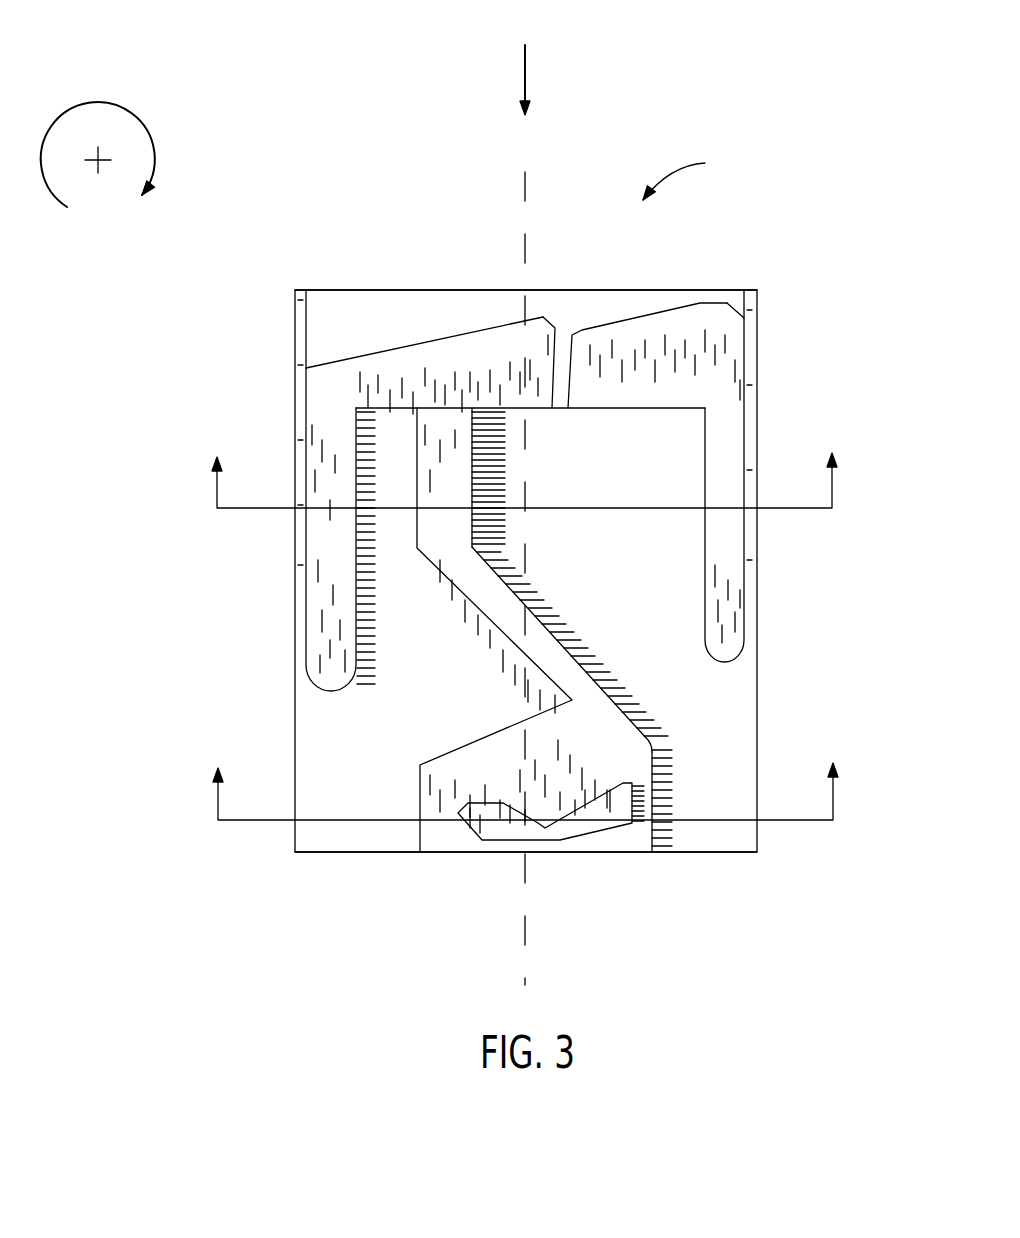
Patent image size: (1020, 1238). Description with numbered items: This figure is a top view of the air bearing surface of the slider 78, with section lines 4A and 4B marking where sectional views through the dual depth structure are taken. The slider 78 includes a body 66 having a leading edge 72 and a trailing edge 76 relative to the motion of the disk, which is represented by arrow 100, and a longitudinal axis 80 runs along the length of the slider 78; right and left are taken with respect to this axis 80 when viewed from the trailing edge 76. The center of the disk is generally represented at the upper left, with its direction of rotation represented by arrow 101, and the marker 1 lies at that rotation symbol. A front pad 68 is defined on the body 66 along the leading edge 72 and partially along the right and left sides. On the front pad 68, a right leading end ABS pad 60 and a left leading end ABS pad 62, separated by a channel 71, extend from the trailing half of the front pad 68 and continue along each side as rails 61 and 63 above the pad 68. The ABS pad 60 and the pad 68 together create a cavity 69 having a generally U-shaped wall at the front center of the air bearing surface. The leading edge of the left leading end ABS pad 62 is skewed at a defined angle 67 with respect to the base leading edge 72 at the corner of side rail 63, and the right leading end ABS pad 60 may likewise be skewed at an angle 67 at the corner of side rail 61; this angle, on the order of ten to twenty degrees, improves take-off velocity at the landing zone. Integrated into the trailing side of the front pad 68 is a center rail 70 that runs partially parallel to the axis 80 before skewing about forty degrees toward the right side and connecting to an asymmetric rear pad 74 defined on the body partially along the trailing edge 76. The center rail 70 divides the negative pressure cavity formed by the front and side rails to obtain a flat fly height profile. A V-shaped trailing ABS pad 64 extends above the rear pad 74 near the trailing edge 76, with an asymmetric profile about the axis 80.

The axis of rotation 1 is at (97, 163).
The arrow representing motion of the disk 100 is at (526, 61).
The arrow representing direction of rotation of the disk 101 is at (143, 122).
The longitudinal axis 80 is at (525, 185).
The slider 78 is at (689, 172).
The right leading end ABS pad 60 is at (732, 315).
The rail 61 is at (745, 538).
The left leading end ABS pad 62 is at (487, 318).
The rail 63 is at (302, 538).
The V-shaped trailing ABS pad 64 is at (592, 852).
The body 66 is at (368, 748).
The defined angle 67 is at (341, 344).
The front pad 68 is at (553, 290).
The cavity 69 is at (392, 462).
The center rail 70 is at (565, 628).
The channel 71 is at (570, 310).
The leading edge 72 is at (412, 278).
The rear pad 74 is at (662, 742).
The trailing edge 76 is at (394, 866).
The section line 4A- 4A is at (526, 463).
The section line 4B- 4B is at (527, 776).